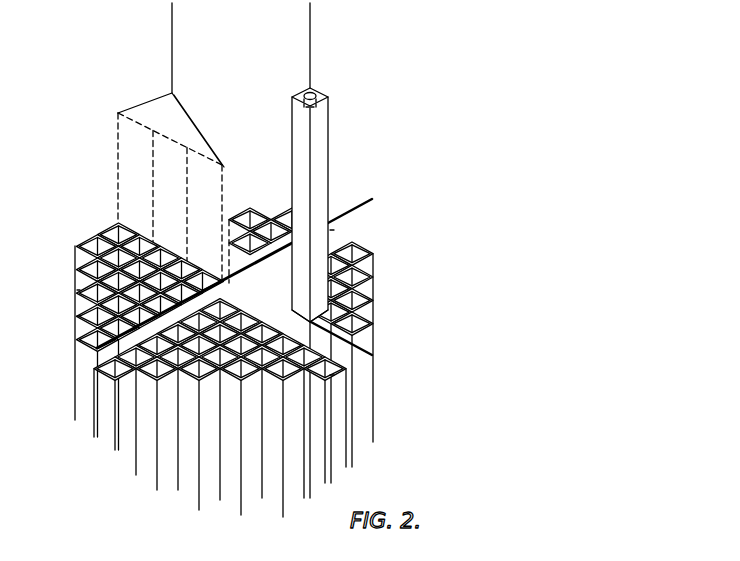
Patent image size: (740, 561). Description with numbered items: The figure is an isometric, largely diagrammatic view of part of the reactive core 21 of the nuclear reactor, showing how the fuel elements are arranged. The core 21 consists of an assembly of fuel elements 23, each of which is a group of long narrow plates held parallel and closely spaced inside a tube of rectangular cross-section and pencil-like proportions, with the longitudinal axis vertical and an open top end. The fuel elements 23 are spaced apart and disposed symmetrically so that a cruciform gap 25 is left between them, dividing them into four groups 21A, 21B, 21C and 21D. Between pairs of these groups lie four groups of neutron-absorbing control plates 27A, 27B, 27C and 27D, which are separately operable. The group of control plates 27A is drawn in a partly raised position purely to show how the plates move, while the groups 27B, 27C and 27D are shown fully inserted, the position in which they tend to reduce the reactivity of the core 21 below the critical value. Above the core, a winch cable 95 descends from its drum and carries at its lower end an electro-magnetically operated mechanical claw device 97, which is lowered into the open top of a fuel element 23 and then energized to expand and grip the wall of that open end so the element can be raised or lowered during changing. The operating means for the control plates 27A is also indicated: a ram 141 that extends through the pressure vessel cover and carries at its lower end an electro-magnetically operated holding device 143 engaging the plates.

The reactive core 21 is at (335, 420).
The group of fuel elements 21A is at (212, 398).
The group of fuel elements 21B is at (360, 243).
The group of fuel elements 21C is at (250, 207).
The group of fuel elements 21D is at (83, 247).
The fuel element 23 is at (322, 172).
The cruciform gap 25 is at (83, 316).
The group of neutron-absorbing control plates 27A is at (137, 152).
The group of neutron-absorbing control plates 27B is at (90, 362).
The group of neutron-absorbing control plates 27C is at (318, 343).
The group of neutron-absorbing control plates 27D is at (333, 222).
The winch cable 95 is at (312, 43).
The electro-magnetically operated mechanical claw device 97 is at (322, 92).
The ram 141 is at (174, 43).
The electro-magnetically operated holding device 143 is at (160, 117).